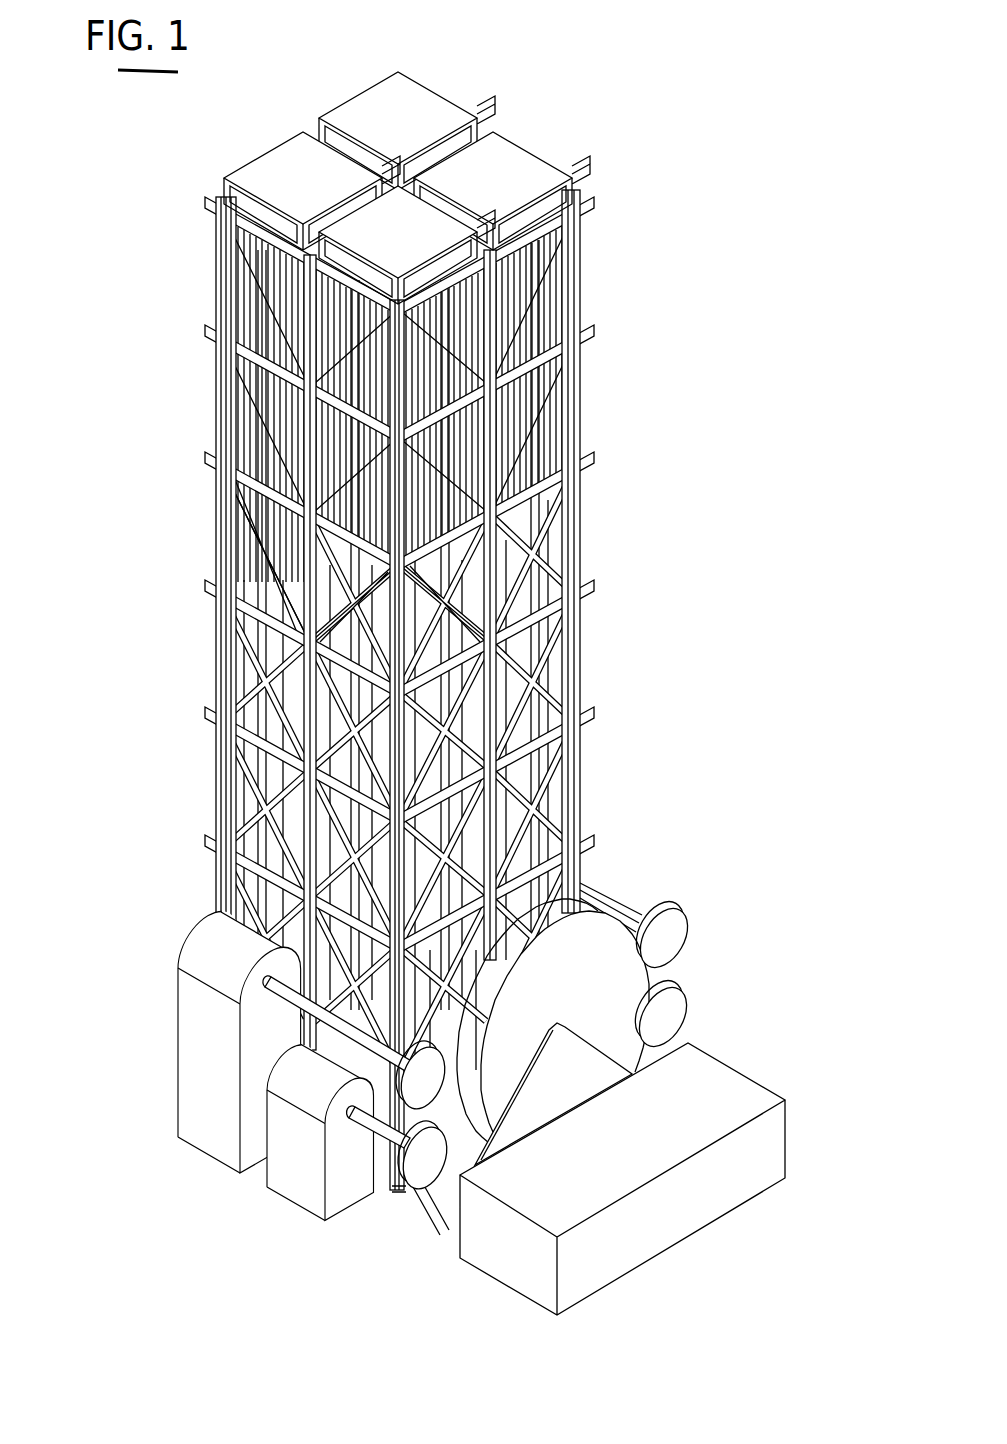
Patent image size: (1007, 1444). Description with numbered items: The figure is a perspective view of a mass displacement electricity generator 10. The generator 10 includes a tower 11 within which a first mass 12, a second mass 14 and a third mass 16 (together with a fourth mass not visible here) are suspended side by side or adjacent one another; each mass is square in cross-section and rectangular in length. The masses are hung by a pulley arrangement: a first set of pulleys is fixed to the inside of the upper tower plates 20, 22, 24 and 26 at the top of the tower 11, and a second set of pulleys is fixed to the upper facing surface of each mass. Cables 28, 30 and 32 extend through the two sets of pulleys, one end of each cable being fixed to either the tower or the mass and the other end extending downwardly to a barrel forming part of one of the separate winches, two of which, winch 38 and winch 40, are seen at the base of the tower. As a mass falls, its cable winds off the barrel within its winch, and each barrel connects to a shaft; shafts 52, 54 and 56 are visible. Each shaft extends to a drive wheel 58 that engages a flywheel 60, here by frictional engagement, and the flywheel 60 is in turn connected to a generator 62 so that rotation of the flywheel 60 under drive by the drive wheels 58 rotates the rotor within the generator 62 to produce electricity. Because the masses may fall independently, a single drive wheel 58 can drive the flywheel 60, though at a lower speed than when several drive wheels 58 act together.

The mass displacement electricity generator 10 is at (740, 135).
The tower 11 is at (410, 716).
The first mass 12 is at (252, 560).
The second mass 14 is at (358, 620).
The third mass 16 is at (520, 575).
The upper tower plate 20 is at (273, 162).
The upper tower plate 22 is at (375, 235).
The upper tower plate 24 is at (512, 177).
The upper tower plate 26 is at (400, 104).
The cable 28 is at (222, 580).
The cable 30 is at (332, 725).
The cable 32 is at (578, 382).
The winch 38 is at (197, 1118).
The winch 40 is at (300, 1178).
The shaft 52 is at (285, 997).
The shaft 54 is at (385, 1135).
The shaft 56 is at (607, 903).
The drive wheel 58 is at (470, 1332).
The flywheel 60 is at (617, 1020).
The generator 62 is at (690, 1210).